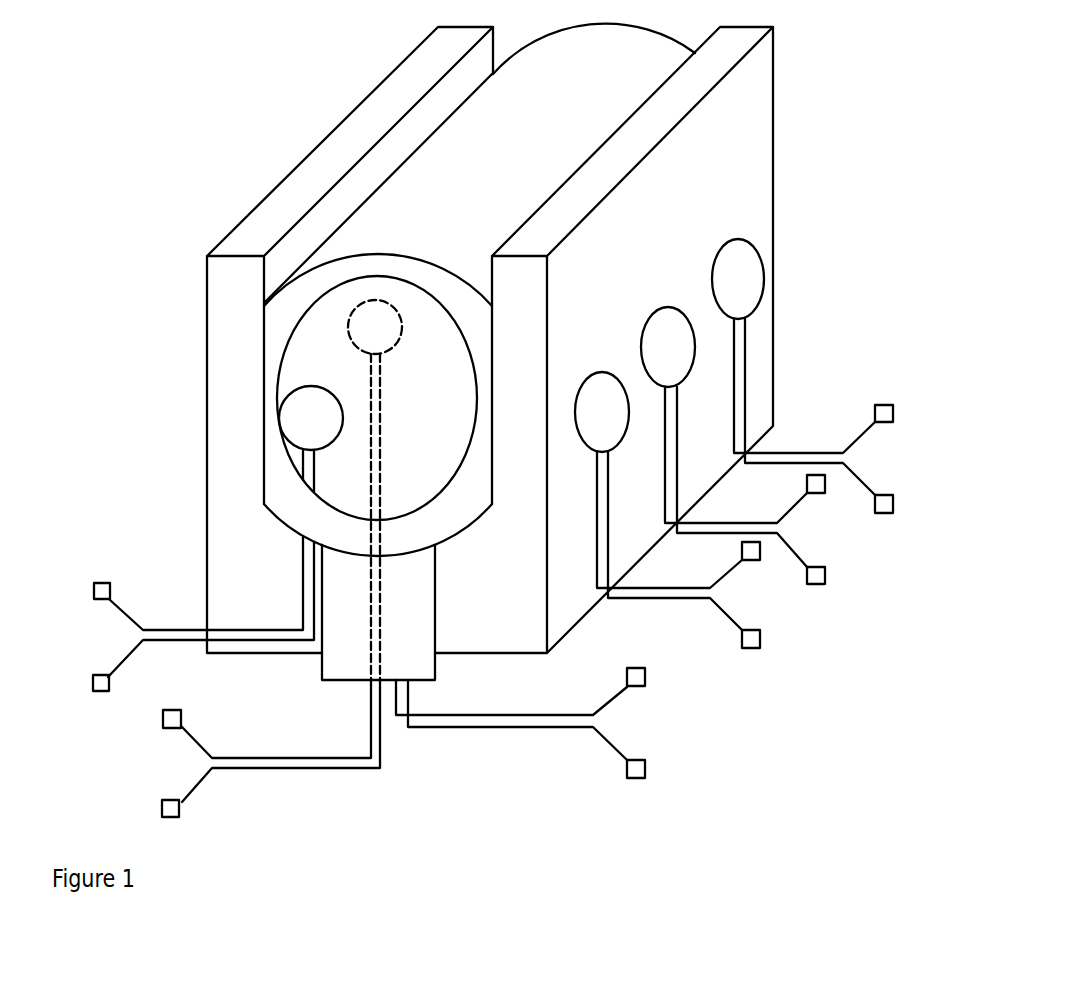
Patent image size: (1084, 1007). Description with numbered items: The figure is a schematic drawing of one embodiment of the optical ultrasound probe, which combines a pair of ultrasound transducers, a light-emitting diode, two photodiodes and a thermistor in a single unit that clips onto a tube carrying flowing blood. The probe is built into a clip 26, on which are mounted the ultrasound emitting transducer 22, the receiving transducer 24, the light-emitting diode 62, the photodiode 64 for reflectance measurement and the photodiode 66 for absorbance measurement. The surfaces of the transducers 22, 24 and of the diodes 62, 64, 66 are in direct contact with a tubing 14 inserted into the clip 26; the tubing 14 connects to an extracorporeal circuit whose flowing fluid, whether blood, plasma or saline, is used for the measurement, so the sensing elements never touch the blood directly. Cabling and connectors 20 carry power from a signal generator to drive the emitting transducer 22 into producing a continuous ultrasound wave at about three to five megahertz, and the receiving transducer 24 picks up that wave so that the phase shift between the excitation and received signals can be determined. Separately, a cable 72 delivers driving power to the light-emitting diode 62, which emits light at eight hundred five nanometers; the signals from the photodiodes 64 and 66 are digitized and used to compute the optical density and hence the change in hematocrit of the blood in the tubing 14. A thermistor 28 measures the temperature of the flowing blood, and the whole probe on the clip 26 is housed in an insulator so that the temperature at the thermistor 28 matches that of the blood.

The tubing 14 is at (323, 282).
The cabling and connectors 20 is at (163, 635).
The ultrasound emitting transducer 22 is at (602, 410).
The receiving transducer 24 is at (302, 415).
The clip 26 is at (262, 230).
The thermistor 28 is at (400, 712).
The light-emitting diode 62 is at (677, 413).
The photodiode for reflectance measurement 64 is at (745, 345).
The photodiode for absorbance measurement 66 is at (370, 328).
The cable 72 is at (828, 572).